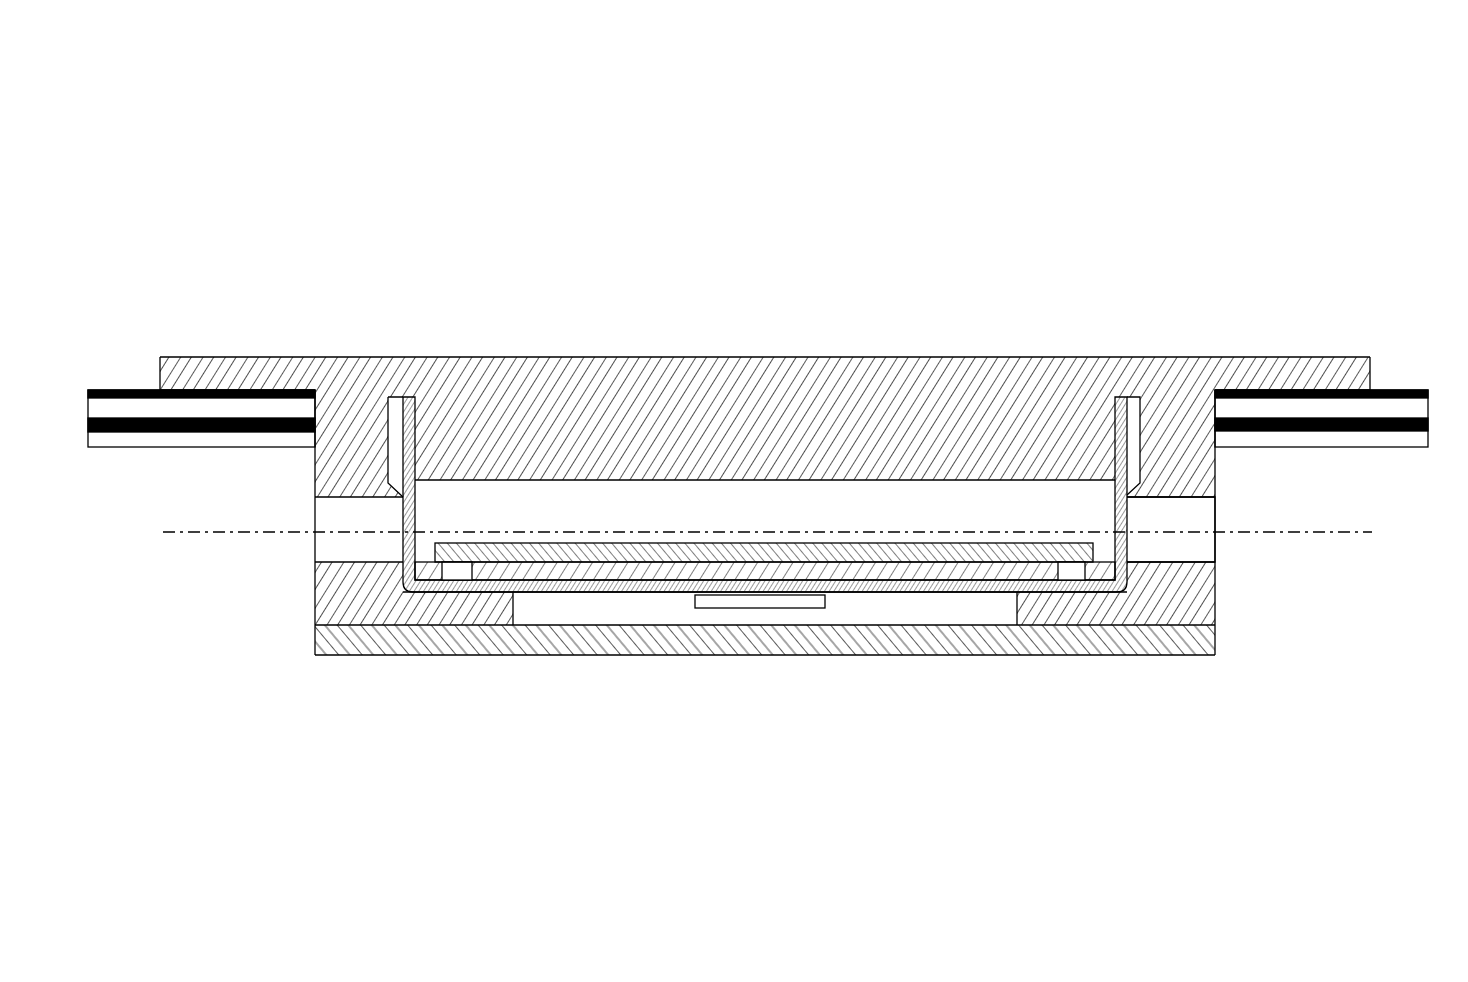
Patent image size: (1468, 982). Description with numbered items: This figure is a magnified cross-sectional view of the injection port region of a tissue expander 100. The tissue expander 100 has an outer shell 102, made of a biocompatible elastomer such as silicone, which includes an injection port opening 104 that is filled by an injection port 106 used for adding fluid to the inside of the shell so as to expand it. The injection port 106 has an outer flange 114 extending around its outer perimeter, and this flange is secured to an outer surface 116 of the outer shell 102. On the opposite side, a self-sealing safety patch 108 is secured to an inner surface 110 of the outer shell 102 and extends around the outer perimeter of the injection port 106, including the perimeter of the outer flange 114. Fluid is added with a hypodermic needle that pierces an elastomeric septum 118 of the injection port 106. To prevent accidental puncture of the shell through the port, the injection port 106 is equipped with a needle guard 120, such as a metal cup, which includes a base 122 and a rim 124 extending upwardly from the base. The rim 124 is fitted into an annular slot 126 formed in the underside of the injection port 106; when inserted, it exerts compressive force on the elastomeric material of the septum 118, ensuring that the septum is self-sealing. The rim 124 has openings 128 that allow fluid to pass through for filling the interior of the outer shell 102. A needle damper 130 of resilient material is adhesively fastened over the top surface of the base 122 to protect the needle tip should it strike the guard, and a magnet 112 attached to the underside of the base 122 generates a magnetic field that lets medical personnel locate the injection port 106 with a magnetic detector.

The tissue expander 100 is at (349, 171).
The outer shell 102 is at (1393, 410).
The injection port opening 104 is at (1210, 305).
The injection port 106 is at (556, 231).
The self-sealing safety patch 108 is at (153, 447).
The inner surface 110 is at (1318, 430).
The magnet 112 is at (773, 602).
The outer flange 114 is at (1305, 372).
The outer surface 116 is at (127, 388).
The septum 118 is at (728, 316).
The needle guard 120 is at (571, 612).
The base 122 is at (632, 585).
The rim 124 is at (408, 540).
The annular slot 126 is at (396, 430).
The openings 128 is at (1172, 541).
The needle damper 130 is at (893, 550).